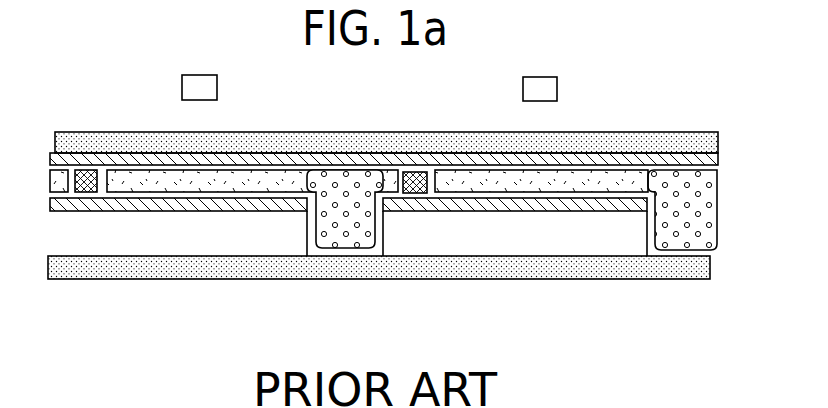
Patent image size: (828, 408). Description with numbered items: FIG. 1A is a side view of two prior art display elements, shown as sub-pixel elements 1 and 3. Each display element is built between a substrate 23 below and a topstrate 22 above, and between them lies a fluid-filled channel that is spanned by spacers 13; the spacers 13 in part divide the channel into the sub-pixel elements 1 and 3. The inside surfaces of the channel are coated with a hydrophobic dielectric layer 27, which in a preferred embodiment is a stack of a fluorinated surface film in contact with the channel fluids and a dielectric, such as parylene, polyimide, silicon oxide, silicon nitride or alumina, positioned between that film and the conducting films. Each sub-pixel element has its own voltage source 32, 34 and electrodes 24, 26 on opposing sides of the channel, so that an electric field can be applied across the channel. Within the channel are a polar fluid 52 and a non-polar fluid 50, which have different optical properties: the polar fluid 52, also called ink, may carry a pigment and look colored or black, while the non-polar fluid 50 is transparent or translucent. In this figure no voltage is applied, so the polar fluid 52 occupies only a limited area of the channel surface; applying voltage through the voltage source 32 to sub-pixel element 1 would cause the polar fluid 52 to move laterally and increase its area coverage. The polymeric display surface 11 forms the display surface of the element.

The sub-pixel element 1 is at (242, 302).
The sub-pixel element 3 is at (577, 300).
The polymeric display surface 11 is at (88, 233).
The spacers 13 is at (420, 172).
The topstrate 22 is at (78, 134).
The substrate 23 is at (153, 268).
The electrode 24 is at (272, 211).
The electrode 26 is at (110, 152).
The hydrophobic dielectric layer 27 is at (355, 163).
The voltage source 32 is at (278, 152).
The voltage source 34 is at (622, 163).
The non-polar fluid 50 is at (377, 181).
The polar fluid 52 is at (345, 209).